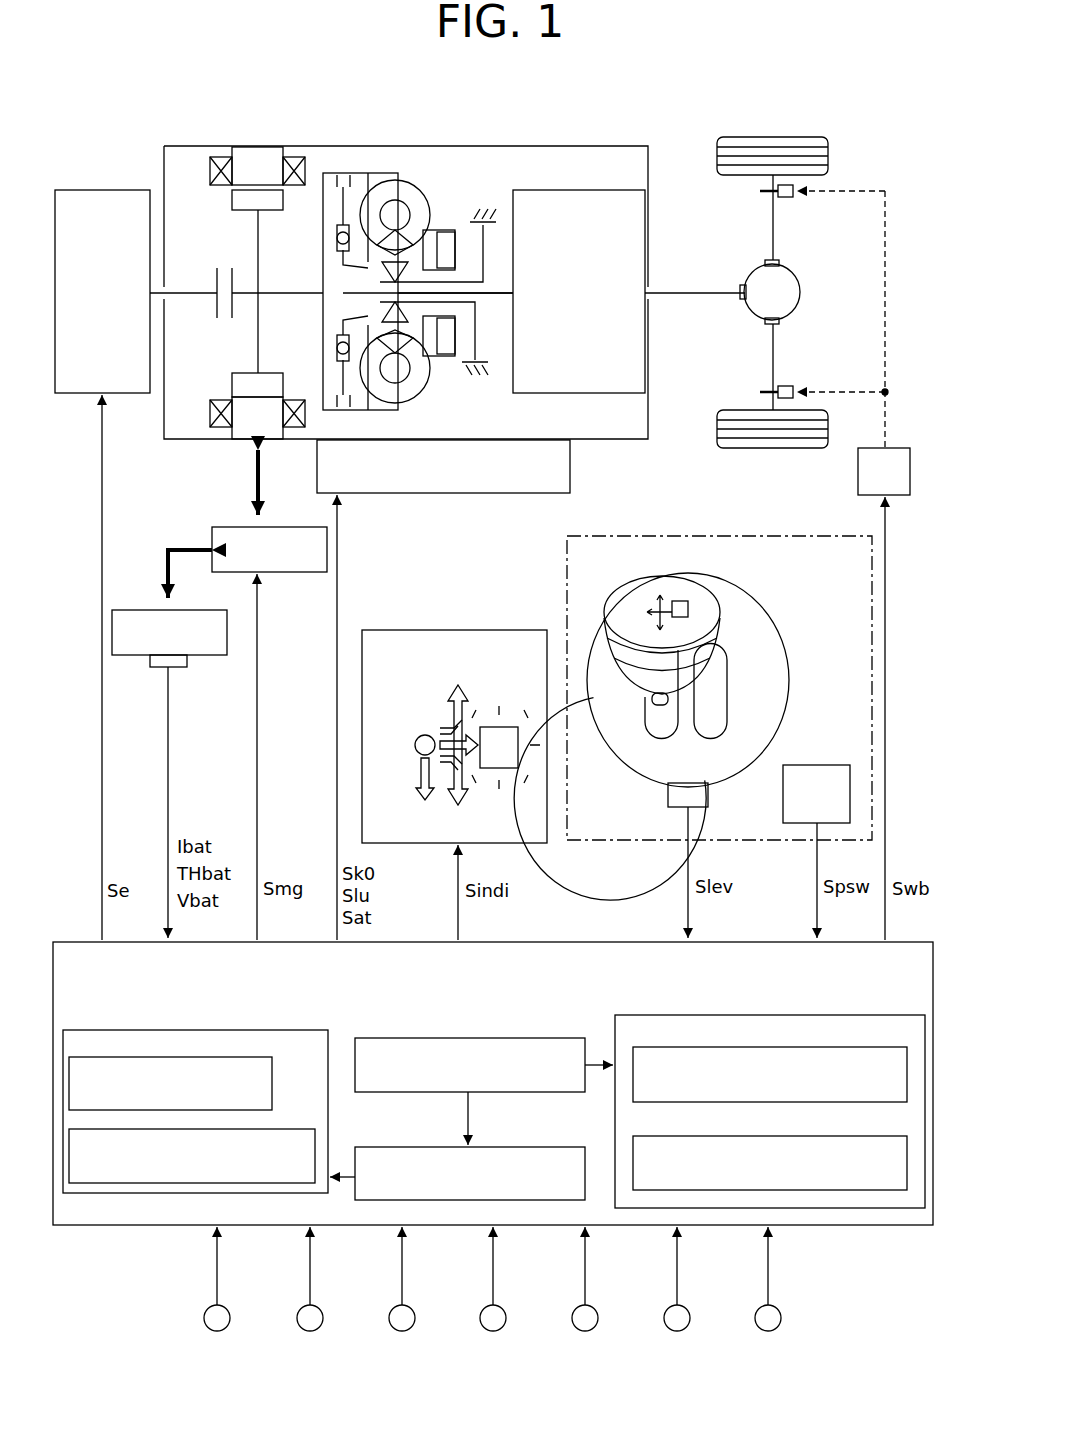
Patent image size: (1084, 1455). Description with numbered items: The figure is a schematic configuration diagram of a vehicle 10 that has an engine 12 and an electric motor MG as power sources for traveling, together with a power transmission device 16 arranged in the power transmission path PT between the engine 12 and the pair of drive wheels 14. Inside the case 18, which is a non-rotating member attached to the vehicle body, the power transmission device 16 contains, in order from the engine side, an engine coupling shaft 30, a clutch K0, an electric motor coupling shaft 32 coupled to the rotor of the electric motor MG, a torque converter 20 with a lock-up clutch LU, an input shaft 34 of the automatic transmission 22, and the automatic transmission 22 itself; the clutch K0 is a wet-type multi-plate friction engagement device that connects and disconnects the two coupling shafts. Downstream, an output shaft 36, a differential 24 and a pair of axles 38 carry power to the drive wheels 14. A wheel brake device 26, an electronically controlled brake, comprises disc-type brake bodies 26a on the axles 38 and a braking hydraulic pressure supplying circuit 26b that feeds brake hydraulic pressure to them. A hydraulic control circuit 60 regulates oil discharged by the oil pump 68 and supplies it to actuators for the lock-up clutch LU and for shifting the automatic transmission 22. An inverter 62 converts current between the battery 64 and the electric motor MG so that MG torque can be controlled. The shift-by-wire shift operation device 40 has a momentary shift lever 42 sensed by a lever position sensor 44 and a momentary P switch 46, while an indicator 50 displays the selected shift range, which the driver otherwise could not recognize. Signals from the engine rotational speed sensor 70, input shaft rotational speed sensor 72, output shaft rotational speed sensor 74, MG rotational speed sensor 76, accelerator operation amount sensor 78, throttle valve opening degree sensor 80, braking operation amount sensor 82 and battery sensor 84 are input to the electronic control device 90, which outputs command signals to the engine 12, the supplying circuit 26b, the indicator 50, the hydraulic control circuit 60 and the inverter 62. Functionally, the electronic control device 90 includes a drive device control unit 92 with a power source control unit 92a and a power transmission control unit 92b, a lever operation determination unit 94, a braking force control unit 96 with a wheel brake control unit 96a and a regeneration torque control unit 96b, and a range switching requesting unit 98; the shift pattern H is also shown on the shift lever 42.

The vehicle 10 is at (547, 86).
The engine 12 is at (104, 195).
The drive wheels 14 is at (717, 158).
The power transmission device 16 is at (578, 135).
The case 18 is at (420, 261).
The torque converter 20 is at (430, 180).
The automatic transmission 22 is at (640, 240).
The differential 24 is at (785, 275).
The wheel brake device 26 is at (893, 380).
The brake body 26a is at (791, 199).
The braking hydraulic pressure supplying circuit 26b is at (858, 473).
The engine coupling shaft 30 is at (186, 290).
The electric motor coupling shaft 32 is at (297, 290).
The input shaft 34 is at (498, 300).
The output shaft 36 is at (686, 297).
The axles 38 is at (770, 220).
The shift operation device 40 is at (693, 699).
The shift lever 42 is at (647, 622).
The lever position sensor 44 is at (698, 793).
The P switch 46 is at (837, 772).
The indicator 50 is at (495, 630).
The hydraulic control circuit 60 is at (570, 468).
The inverter 62 is at (218, 527).
The battery 64 is at (205, 611).
The oil pump 68 is at (447, 358).
The engine rotational speed sensor 70 is at (220, 1326).
The input shaft rotational speed sensor 72 is at (313, 1326).
The output shaft rotational speed sensor 74 is at (405, 1326).
The MG rotational speed sensor 76 is at (496, 1326).
The accelerator operation amount sensor 78 is at (588, 1326).
The throttle valve opening degree sensor 80 is at (680, 1326).
The braking operation amount sensor 82 is at (771, 1326).
The battery sensor 84 is at (152, 664).
The electronic control device 90 is at (598, 942).
The drive device control unit 92 is at (180, 1045).
The power source control unit 92a is at (265, 1058).
The power transmission control unit 92b is at (262, 1130).
The lever operation determination unit 94 is at (560, 1038).
The braking force control unit 96 is at (765, 1020).
The wheel brake control unit 96a is at (858, 1048).
The regeneration torque control unit 96b is at (860, 1137).
The range switching requesting unit 98 is at (560, 1147).
The power transmission path PT is at (400, 95).
The lock-up clutch LU is at (355, 185).
The clutch K0 is at (214, 288).
The electric motor MG is at (257, 293).
The shift pattern H is at (645, 610).